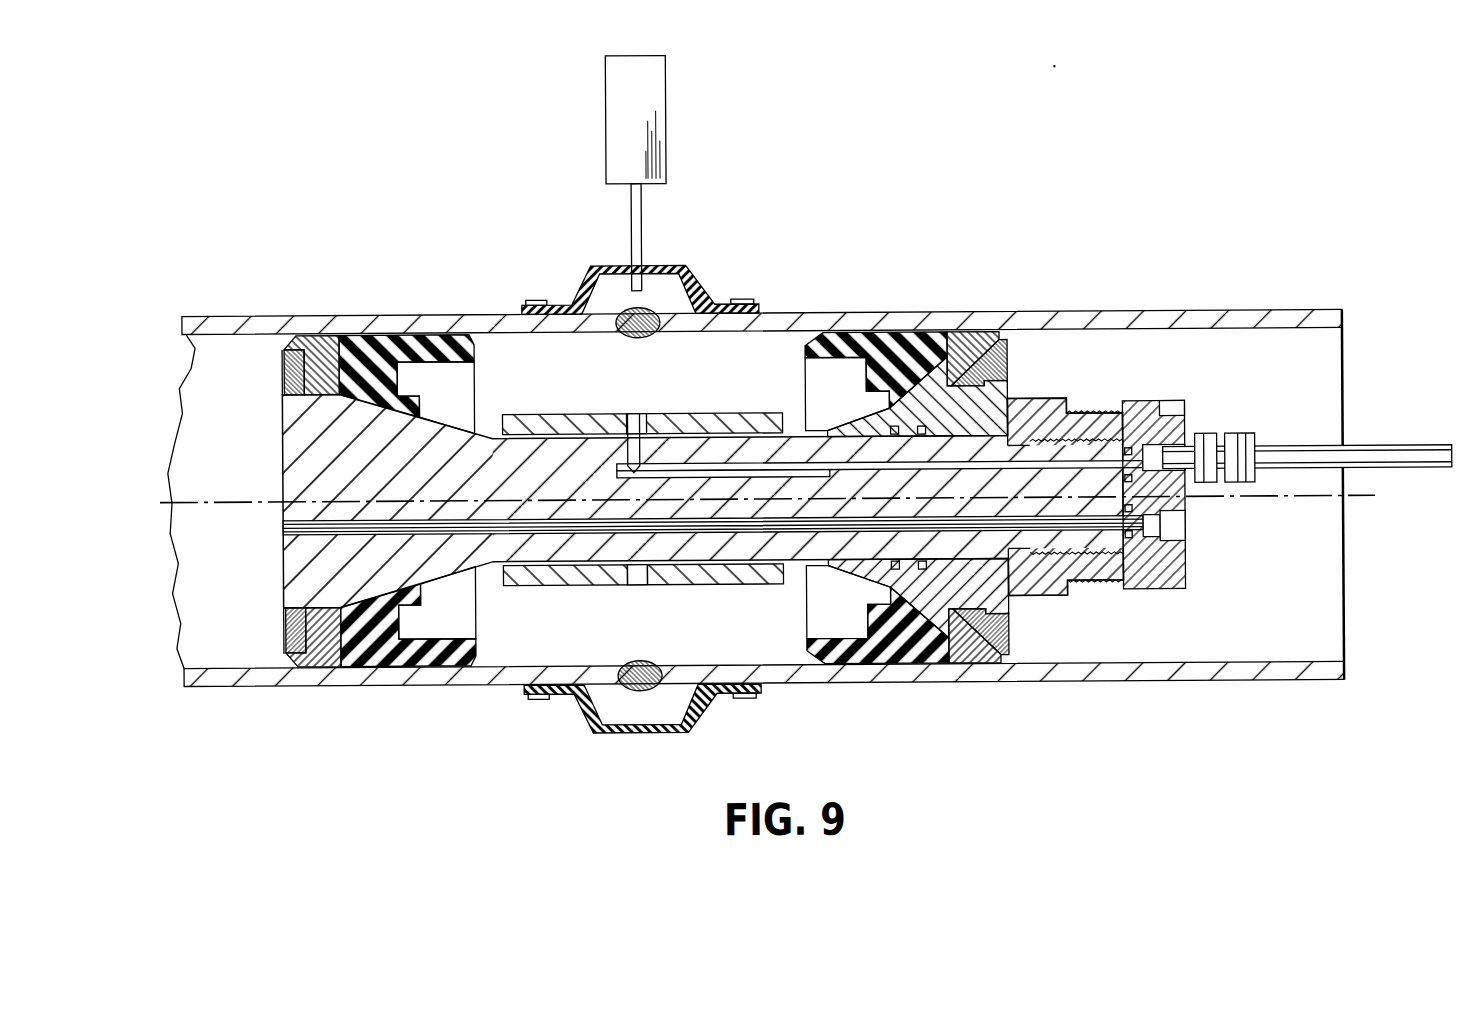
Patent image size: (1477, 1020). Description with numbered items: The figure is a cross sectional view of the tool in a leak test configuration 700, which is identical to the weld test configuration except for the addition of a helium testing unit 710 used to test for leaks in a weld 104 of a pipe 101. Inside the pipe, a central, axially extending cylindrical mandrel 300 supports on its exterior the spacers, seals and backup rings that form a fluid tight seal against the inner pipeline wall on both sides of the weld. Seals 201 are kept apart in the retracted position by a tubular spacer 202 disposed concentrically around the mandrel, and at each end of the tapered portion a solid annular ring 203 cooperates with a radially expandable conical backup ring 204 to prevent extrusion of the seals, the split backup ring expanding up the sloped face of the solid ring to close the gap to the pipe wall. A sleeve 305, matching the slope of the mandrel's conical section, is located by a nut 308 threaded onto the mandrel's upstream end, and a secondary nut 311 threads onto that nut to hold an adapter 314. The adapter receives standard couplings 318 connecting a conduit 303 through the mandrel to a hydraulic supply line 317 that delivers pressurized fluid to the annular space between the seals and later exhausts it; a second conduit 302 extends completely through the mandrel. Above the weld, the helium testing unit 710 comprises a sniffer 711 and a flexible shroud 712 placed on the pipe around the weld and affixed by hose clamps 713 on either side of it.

The pipe 101 is at (1300, 313).
The weld 104 is at (645, 338).
The seals 201 is at (374, 352).
The tubular spacer 202 is at (500, 652).
The solid annular ring 203 is at (292, 378).
The radially expandable conical backup ring 204 is at (320, 350).
The mandrel 300 is at (695, 533).
The second conduit 302 is at (283, 533).
The conduit 303 is at (720, 463).
The sleeve 305 is at (832, 572).
The nut 308 is at (1040, 400).
The secondary nut 311 is at (1100, 413).
The adapter 314 is at (1185, 560).
The hydraulic supply line 317 is at (1405, 451).
The couplings 318 is at (1240, 436).
The leak test configuration 700 is at (821, 511).
The helium testing unit 710 is at (629, 395).
The sniffer 711 is at (668, 113).
The flexible shroud 712 is at (682, 265).
The hose clamps 713 is at (537, 299).